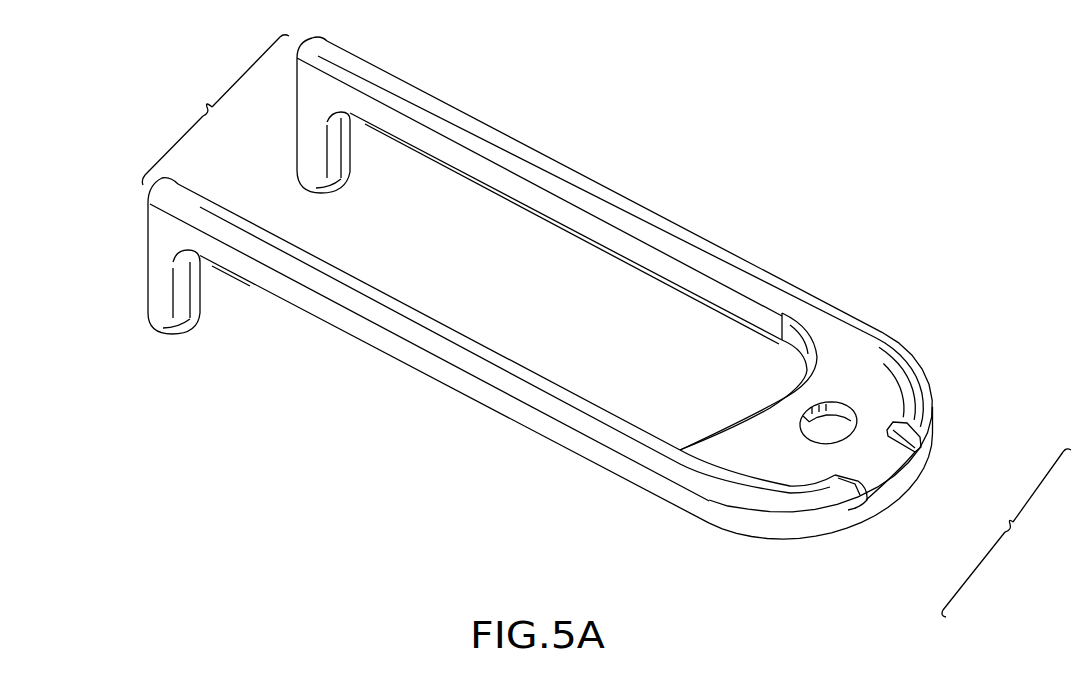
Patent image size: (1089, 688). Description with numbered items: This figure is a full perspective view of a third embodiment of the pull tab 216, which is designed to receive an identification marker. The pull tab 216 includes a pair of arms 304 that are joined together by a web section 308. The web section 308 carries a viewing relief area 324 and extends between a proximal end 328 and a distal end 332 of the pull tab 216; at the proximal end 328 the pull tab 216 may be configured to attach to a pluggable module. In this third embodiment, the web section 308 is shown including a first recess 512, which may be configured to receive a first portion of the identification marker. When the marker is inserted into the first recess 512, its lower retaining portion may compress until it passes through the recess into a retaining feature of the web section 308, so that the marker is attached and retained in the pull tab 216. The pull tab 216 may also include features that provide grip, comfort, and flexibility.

The pull tab 216 is at (748, 104).
The arms 304 is at (465, 127).
The web section 308 is at (772, 410).
The viewing relief area 324 is at (898, 474).
The proximal end 328 is at (215, 110).
The distal end 332 is at (1006, 533).
The first recess 512 is at (833, 405).